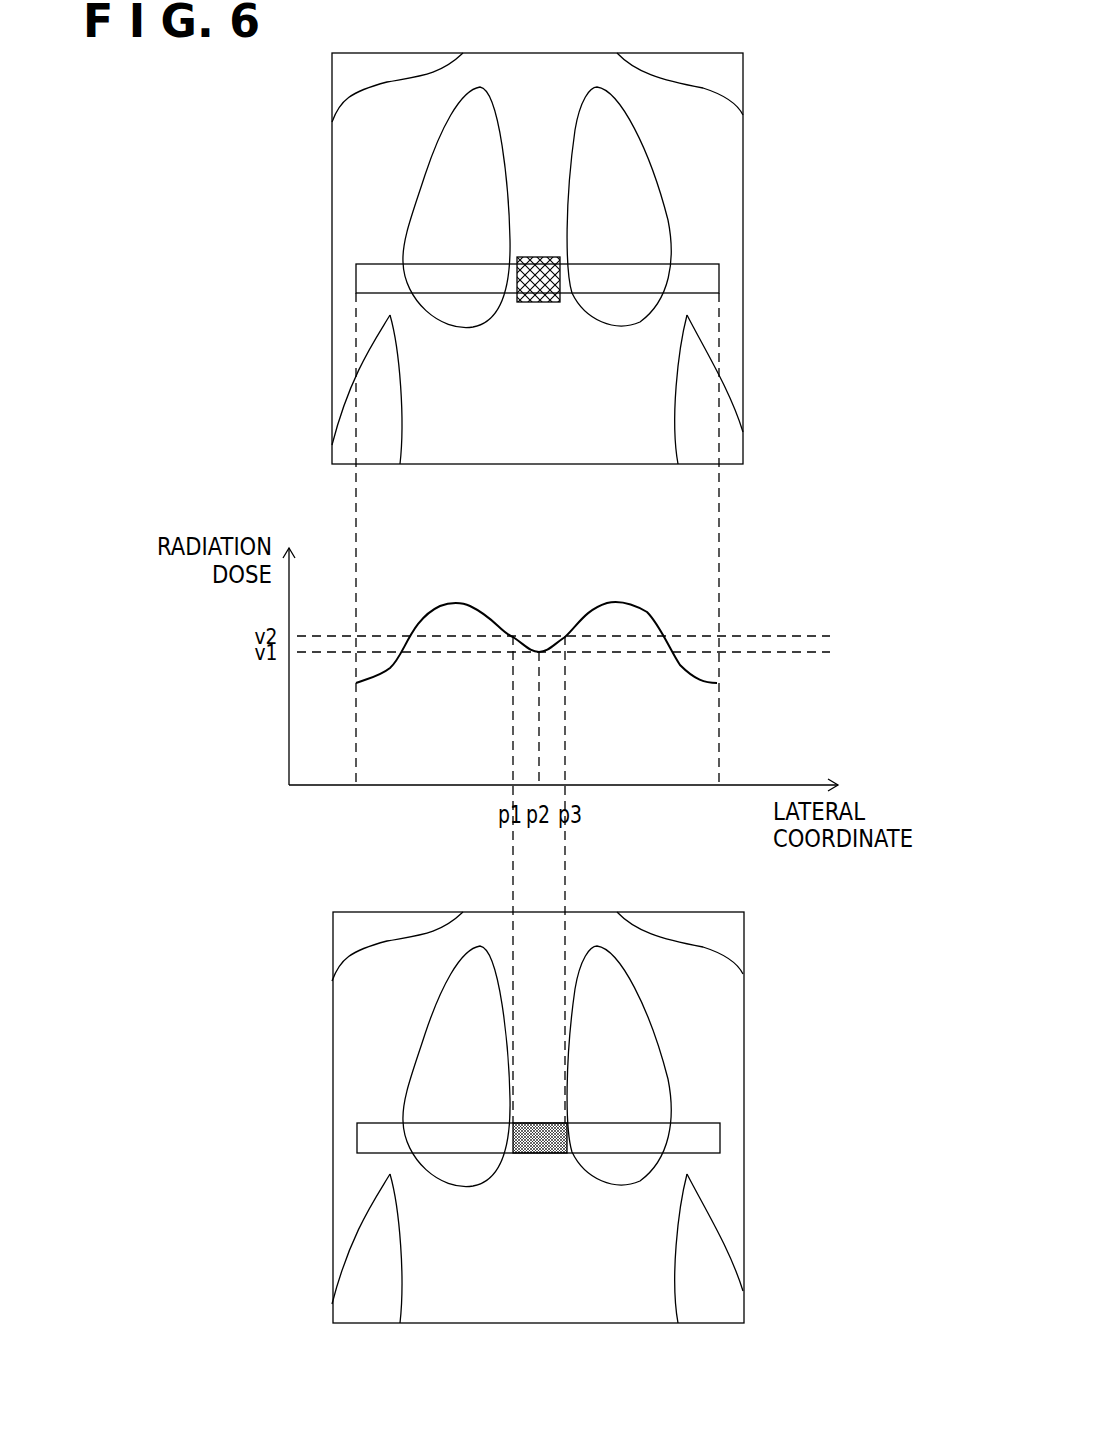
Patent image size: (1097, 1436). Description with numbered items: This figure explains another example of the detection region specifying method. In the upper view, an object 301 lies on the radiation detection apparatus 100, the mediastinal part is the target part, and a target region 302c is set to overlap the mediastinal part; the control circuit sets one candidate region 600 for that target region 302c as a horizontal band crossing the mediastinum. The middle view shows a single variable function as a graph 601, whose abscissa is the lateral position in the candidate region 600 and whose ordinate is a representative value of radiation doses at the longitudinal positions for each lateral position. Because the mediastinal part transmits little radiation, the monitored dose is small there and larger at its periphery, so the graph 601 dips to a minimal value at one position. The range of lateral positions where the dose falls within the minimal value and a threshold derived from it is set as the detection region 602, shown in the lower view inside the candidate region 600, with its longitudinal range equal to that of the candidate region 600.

The radiation detection apparatus 100 is at (673, 53).
The object 301 is at (723, 96).
The candidate region 600 is at (720, 278).
The target region 302c is at (537, 257).
The graph 601 is at (643, 610).
The detection region 602 is at (541, 1154).